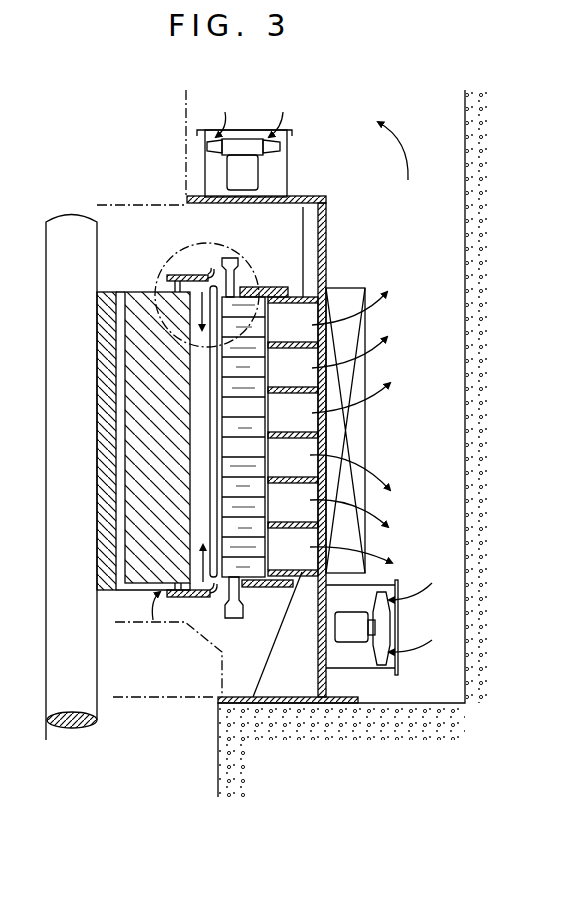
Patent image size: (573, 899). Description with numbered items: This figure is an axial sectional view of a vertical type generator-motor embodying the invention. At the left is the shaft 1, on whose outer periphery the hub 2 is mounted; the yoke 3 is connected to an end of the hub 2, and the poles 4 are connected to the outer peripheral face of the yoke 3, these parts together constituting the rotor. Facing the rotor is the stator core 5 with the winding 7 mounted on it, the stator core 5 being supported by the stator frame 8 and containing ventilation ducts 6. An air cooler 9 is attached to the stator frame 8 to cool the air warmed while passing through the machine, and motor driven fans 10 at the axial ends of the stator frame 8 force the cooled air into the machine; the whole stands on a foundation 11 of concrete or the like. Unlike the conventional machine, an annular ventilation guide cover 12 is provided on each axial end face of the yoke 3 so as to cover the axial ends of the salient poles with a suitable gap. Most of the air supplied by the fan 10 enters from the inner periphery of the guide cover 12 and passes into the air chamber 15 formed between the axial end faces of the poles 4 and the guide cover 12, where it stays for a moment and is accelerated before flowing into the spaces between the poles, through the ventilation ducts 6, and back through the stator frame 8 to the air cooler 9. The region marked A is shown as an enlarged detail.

The shaft 1 is at (60, 228).
The hub 2 is at (105, 290).
The yoke 3 is at (130, 290).
The poles 4 is at (214, 290).
The stator core 5 is at (285, 478).
The ventilation ducts 6 is at (265, 372).
The winding 7 is at (236, 266).
The stator frame 8 is at (326, 238).
The air cooler 9 is at (366, 372).
The motor driven fans 10 is at (287, 160).
The foundation 11 is at (405, 703).
The annular ventilation guide cover 12 is at (180, 276).
The air chamber 15 is at (200, 275).
The detail region A is at (248, 258).